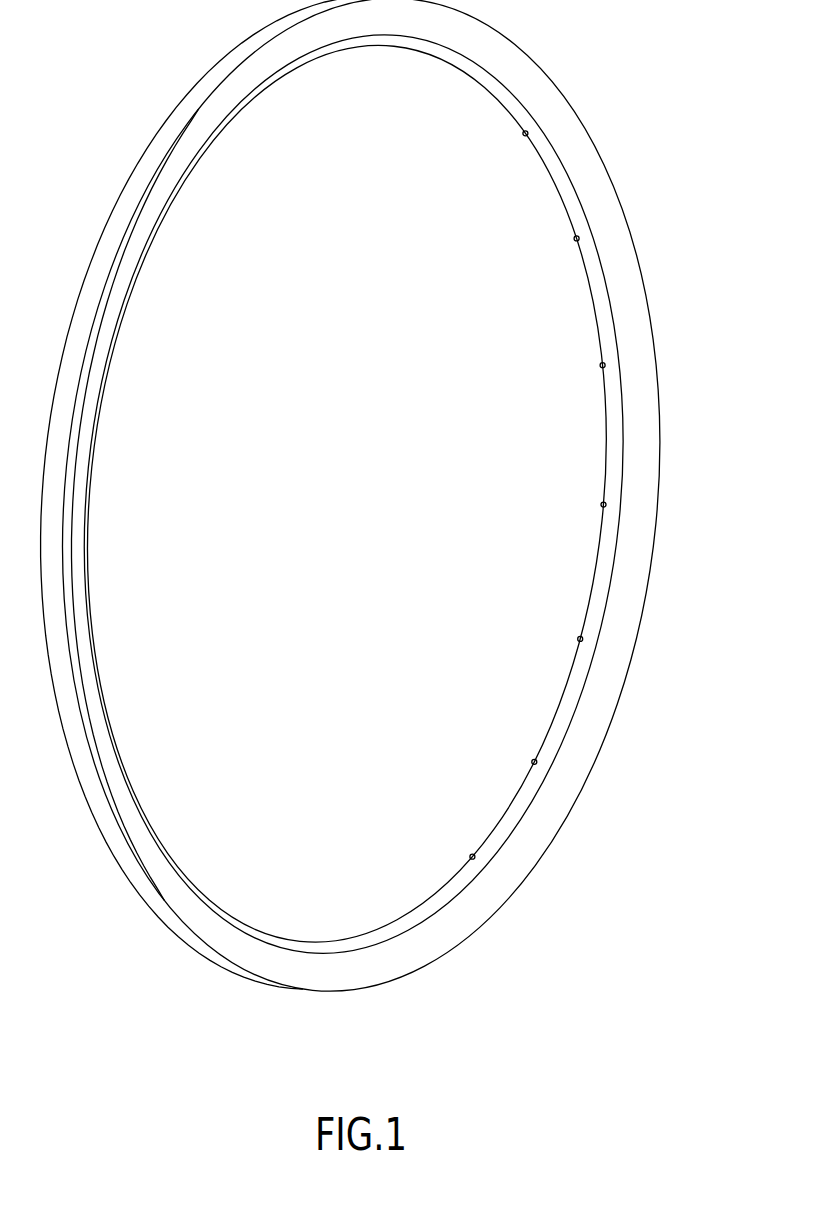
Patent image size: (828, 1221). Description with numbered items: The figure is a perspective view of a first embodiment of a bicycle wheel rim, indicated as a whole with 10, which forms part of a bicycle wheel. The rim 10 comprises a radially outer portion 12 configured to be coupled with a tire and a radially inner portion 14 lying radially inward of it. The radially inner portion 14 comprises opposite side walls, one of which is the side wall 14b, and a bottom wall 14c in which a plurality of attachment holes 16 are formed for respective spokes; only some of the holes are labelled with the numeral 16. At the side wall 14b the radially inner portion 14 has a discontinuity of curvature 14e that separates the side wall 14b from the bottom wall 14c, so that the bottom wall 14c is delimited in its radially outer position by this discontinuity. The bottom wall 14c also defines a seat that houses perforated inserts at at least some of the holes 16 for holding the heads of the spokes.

The bicycle wheel rim 10 is at (626, 69).
The radially outer portion 12 is at (144, 167).
The radially inner portion 14 is at (174, 187).
The side wall 14b is at (603, 204).
The bottom wall 14c is at (584, 275).
The discontinuity of curvature 14e is at (615, 304).
The attachment holes 16 is at (600, 366).